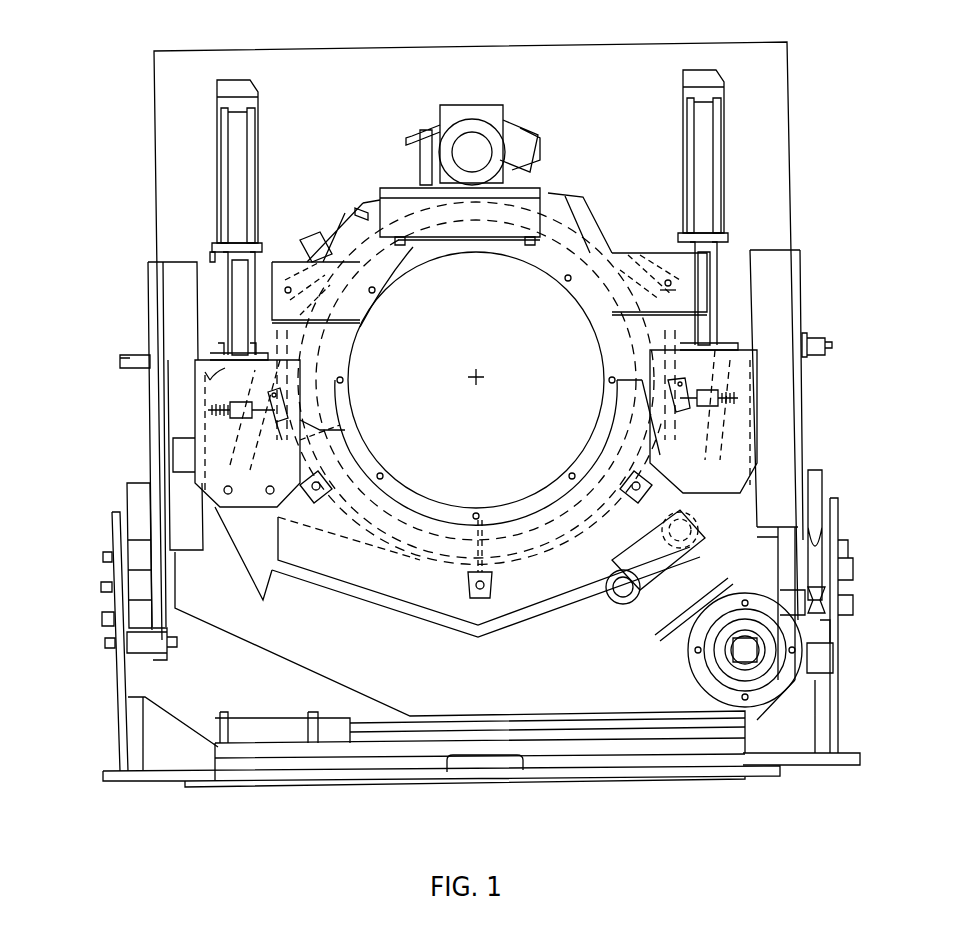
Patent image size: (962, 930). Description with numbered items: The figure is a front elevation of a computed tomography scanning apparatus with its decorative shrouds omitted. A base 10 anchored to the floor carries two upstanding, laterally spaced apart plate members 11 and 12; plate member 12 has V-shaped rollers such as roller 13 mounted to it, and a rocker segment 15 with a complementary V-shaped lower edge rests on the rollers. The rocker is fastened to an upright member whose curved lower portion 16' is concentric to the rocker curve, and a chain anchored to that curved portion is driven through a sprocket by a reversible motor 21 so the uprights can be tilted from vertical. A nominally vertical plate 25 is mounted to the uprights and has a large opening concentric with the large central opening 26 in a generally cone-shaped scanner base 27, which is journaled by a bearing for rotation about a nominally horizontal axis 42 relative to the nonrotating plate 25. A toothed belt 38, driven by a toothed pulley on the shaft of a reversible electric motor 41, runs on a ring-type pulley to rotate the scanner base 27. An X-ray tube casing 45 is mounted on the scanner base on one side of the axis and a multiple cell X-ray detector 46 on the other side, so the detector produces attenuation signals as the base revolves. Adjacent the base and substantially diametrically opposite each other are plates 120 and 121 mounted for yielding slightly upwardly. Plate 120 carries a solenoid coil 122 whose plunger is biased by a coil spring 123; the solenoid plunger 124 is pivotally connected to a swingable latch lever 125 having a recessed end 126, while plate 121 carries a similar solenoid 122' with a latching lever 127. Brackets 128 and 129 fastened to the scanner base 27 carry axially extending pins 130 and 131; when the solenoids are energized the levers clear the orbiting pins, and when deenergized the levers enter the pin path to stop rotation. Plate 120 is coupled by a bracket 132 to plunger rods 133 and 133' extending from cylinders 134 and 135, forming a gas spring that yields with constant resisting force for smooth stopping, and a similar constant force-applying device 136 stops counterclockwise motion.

The base 10 is at (172, 783).
The plate member 11 is at (124, 706).
The plate member 12 is at (834, 662).
The V-shaped roller 13 is at (810, 592).
The rocker segment 15 is at (818, 545).
The curved lower portion 16' is at (767, 595).
The reversible motor 21 is at (266, 734).
The vertical plate 25 is at (290, 68).
The central opening 26 is at (402, 490).
The scanner base 27 is at (346, 362).
The toothed belt 38 is at (658, 633).
The reversible electric motor 41 is at (688, 674).
The axis 42 is at (480, 376).
The X-ray tube casing 45 is at (518, 122).
The multiple cell X-ray detector 46 is at (527, 188).
The plate 120 is at (208, 385).
The plate 121 is at (742, 374).
The solenoid coil 122 is at (237, 393).
The solenoid 122' is at (703, 425).
The coil spring 123 is at (222, 420).
The solenoid plunger 124 is at (270, 432).
The latch lever 125 is at (334, 401).
The recessed end 126 is at (348, 425).
The latching lever 127 is at (612, 362).
The bracket 128 is at (310, 262).
The bracket 129 is at (618, 257).
The pin 130 is at (286, 289).
The pin 131 is at (683, 289).
The bracket 132 is at (218, 347).
The plunger rod 133 is at (350, 287).
The plunger rod 133' is at (160, 226).
The cylinder 134 is at (218, 138).
The cylinder 135 is at (258, 148).
The constant force-applying device 136 is at (730, 165).